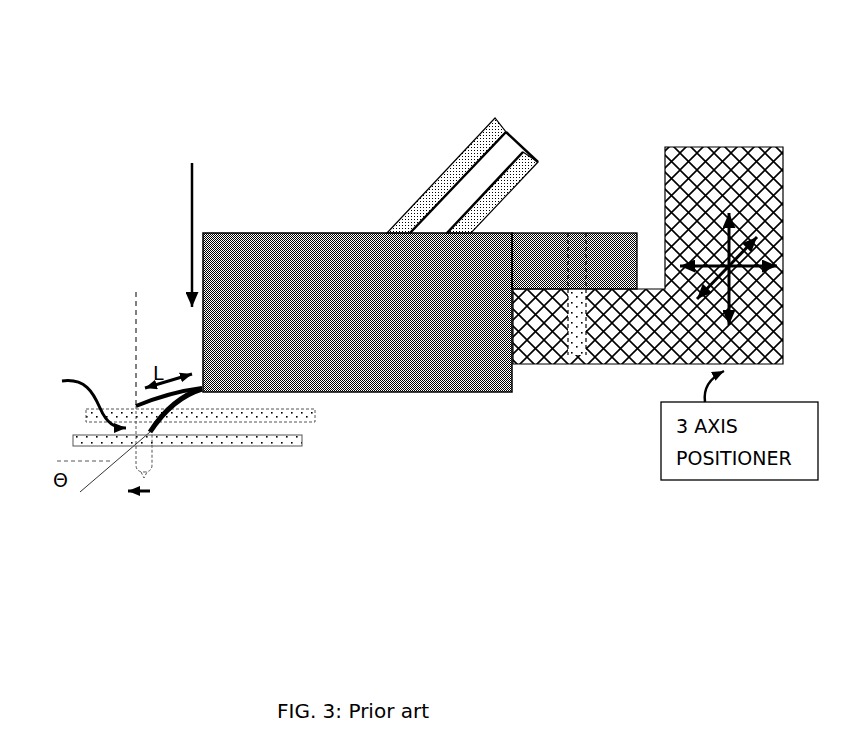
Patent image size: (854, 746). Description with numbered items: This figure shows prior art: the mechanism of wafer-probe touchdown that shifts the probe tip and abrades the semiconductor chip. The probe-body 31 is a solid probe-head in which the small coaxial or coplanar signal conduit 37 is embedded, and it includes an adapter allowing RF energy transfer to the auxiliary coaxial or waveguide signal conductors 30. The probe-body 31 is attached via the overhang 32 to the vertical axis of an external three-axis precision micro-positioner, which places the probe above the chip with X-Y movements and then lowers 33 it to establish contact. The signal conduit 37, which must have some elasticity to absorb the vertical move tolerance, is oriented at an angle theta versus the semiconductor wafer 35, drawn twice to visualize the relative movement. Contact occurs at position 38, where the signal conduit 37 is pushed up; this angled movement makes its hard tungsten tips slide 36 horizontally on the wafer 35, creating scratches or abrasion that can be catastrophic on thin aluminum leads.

The auxiliary signal conductor 30 is at (482, 132).
The probe-body 31 is at (360, 233).
The overhang 32 is at (587, 233).
The lowering movement 33 is at (190, 213).
The semiconductor wafer 35 is at (314, 422).
The horizontal sliding movement 36 is at (143, 497).
The signal conduit 37 is at (136, 407).
The contact position 38 is at (75, 397).